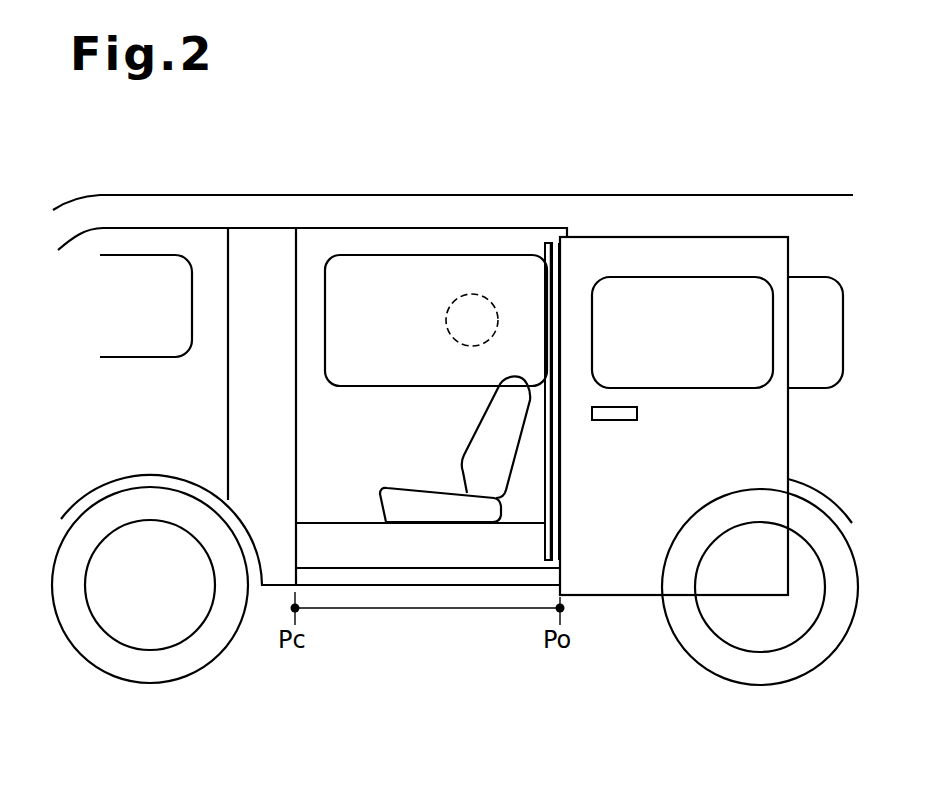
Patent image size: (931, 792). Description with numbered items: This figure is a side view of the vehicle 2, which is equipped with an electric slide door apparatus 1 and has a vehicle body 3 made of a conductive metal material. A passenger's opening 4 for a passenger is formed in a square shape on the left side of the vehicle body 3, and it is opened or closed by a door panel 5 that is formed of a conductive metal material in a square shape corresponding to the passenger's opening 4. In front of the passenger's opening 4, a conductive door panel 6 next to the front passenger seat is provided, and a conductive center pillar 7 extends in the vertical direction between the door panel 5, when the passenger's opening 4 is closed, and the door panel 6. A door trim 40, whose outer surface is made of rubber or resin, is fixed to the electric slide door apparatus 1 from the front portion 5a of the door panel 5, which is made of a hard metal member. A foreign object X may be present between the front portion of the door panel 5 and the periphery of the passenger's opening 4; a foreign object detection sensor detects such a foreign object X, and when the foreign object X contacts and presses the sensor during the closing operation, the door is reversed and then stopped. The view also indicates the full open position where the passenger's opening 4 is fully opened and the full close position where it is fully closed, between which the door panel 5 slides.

The electric slide door apparatus 1 is at (607, 596).
The vehicle 2 is at (661, 197).
The vehicle body 3 is at (557, 199).
The passenger's opening 4 is at (407, 232).
The door panel 5 is at (790, 424).
The front portion 5a is at (558, 272).
The door panel 6 is at (150, 236).
The center pillar 7 is at (259, 237).
The door trim 40 is at (547, 351).
The foreign object X is at (458, 306).